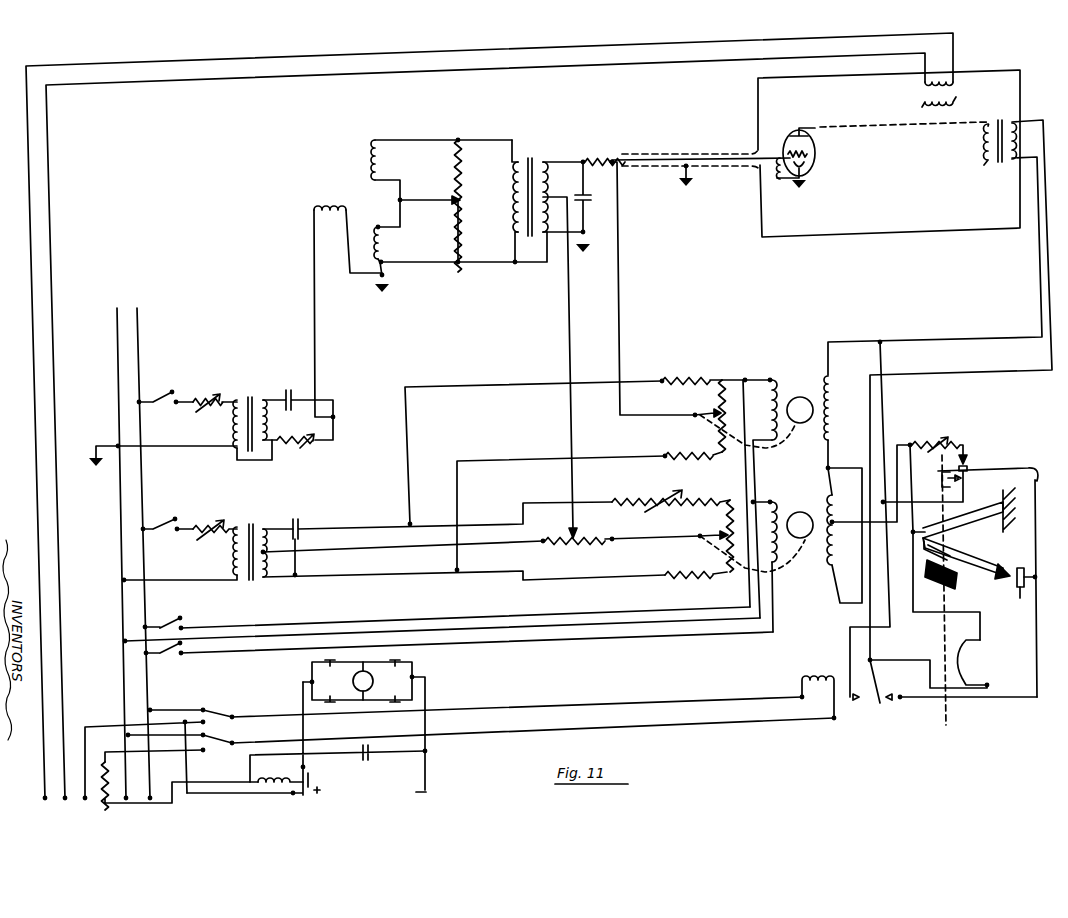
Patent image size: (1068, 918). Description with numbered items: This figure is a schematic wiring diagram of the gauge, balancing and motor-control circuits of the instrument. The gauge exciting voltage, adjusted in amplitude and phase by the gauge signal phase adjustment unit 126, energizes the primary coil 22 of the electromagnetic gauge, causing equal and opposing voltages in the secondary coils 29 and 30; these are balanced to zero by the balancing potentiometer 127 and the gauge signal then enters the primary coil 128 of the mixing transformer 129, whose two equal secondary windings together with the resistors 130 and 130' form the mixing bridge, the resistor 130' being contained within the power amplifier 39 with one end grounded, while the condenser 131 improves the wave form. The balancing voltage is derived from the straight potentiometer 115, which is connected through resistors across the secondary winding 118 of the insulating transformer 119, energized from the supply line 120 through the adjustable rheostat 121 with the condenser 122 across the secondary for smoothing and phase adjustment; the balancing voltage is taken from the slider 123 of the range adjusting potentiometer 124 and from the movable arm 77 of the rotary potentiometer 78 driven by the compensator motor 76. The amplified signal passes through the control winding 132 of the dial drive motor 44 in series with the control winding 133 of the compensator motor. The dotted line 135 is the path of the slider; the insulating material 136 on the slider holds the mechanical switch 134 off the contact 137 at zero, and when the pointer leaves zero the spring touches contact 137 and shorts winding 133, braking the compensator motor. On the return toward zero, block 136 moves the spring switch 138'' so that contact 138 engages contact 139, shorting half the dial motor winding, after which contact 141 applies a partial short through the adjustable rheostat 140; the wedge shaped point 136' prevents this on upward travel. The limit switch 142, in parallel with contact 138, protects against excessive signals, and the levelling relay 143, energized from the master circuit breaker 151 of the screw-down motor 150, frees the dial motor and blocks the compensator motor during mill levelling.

The primary coil 22 is at (312, 205).
The secondary coil 29 is at (359, 146).
The secondary coil 30 is at (373, 250).
The power amplifier 39 is at (832, 365).
The dial drive motor 44 is at (800, 538).
The compensator motor 76 is at (800, 397).
The movable arm 77 is at (718, 398).
The rotary potentiometer 78 is at (727, 382).
The straight potentiometer 115 is at (724, 548).
The secondary winding 118 is at (259, 580).
The insulating transformer 119 is at (255, 526).
The supply line 120 is at (119, 356).
The adjustable rheostat 121 is at (203, 528).
The condenser 122 is at (302, 526).
The slider 123 is at (568, 530).
The range adjusting potentiometer 124 is at (622, 549).
The gauge signal phase adjustment unit 126 is at (251, 398).
The balancing potentiometer 127 is at (477, 205).
The primary coil 128 is at (462, 224).
The mixing transformer 129 is at (536, 160).
The resistor 130 is at (638, 274).
The resistor 130' is at (765, 168).
The condenser 131 is at (588, 200).
The control winding 132 is at (838, 530).
The control winding 133 is at (836, 410).
The mechanical switch 134 is at (1005, 468).
The dotted line 135 is at (946, 600).
The insulating material 136 is at (922, 574).
The wedge shaped point 136' is at (978, 581).
The contact 137 is at (968, 480).
The contact 138 is at (950, 573).
The spring switch 138'' is at (973, 531).
The contact 139 is at (1022, 595).
The adjustable rheostat 140 is at (936, 444).
The contact 141 is at (968, 467).
The limit switch 142 is at (936, 664).
The levelling relay 143 is at (830, 676).
The screw-down motor 150 is at (352, 680).
The master circuit breaker 151 is at (314, 771).